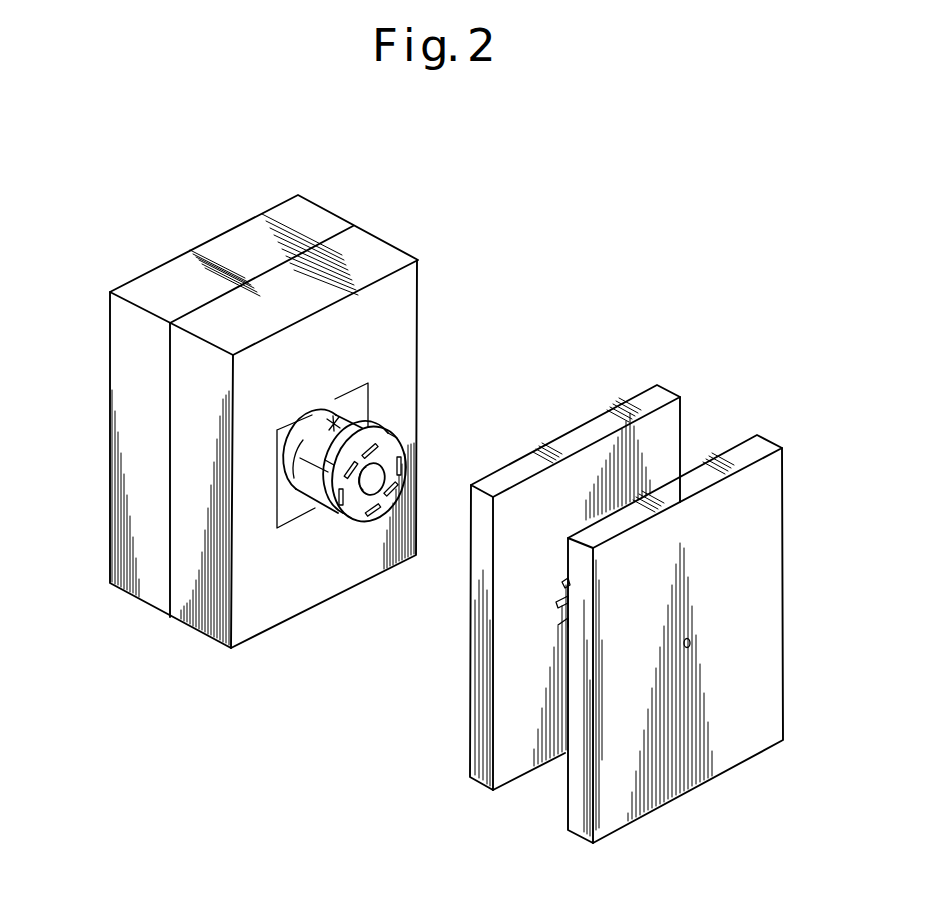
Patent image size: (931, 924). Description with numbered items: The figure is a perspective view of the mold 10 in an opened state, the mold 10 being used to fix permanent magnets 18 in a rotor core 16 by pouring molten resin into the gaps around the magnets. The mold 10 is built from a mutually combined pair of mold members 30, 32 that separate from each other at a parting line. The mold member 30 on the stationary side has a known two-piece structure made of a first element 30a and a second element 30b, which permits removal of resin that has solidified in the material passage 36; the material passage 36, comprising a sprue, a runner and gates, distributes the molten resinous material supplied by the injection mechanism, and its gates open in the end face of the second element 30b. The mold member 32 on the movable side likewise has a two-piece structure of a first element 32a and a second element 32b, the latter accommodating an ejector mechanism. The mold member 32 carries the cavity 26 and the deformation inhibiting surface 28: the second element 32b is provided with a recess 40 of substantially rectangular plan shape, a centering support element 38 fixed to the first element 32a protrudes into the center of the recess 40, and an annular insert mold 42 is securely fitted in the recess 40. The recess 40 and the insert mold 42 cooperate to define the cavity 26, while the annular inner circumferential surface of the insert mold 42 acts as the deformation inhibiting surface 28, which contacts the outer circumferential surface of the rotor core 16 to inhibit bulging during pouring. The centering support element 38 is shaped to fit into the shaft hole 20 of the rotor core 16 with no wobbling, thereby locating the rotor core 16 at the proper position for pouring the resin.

The mold 10 is at (637, 198).
The rotor core 16 is at (325, 518).
The permanent magnet 18 is at (420, 463).
The shaft hole 20 is at (373, 484).
The cavity 26 is at (358, 426).
The deformation inhibiting surface 28 is at (303, 500).
The mold member 30 is at (865, 397).
The first element 30a is at (765, 438).
The second element 30b is at (668, 392).
The mold member 32 is at (487, 198).
The first element 32a is at (328, 210).
The second element 32b is at (392, 242).
The material passage 36 is at (690, 642).
The centering support element 38 is at (330, 422).
The recess 40 is at (290, 462).
The insert mold 42 is at (276, 447).